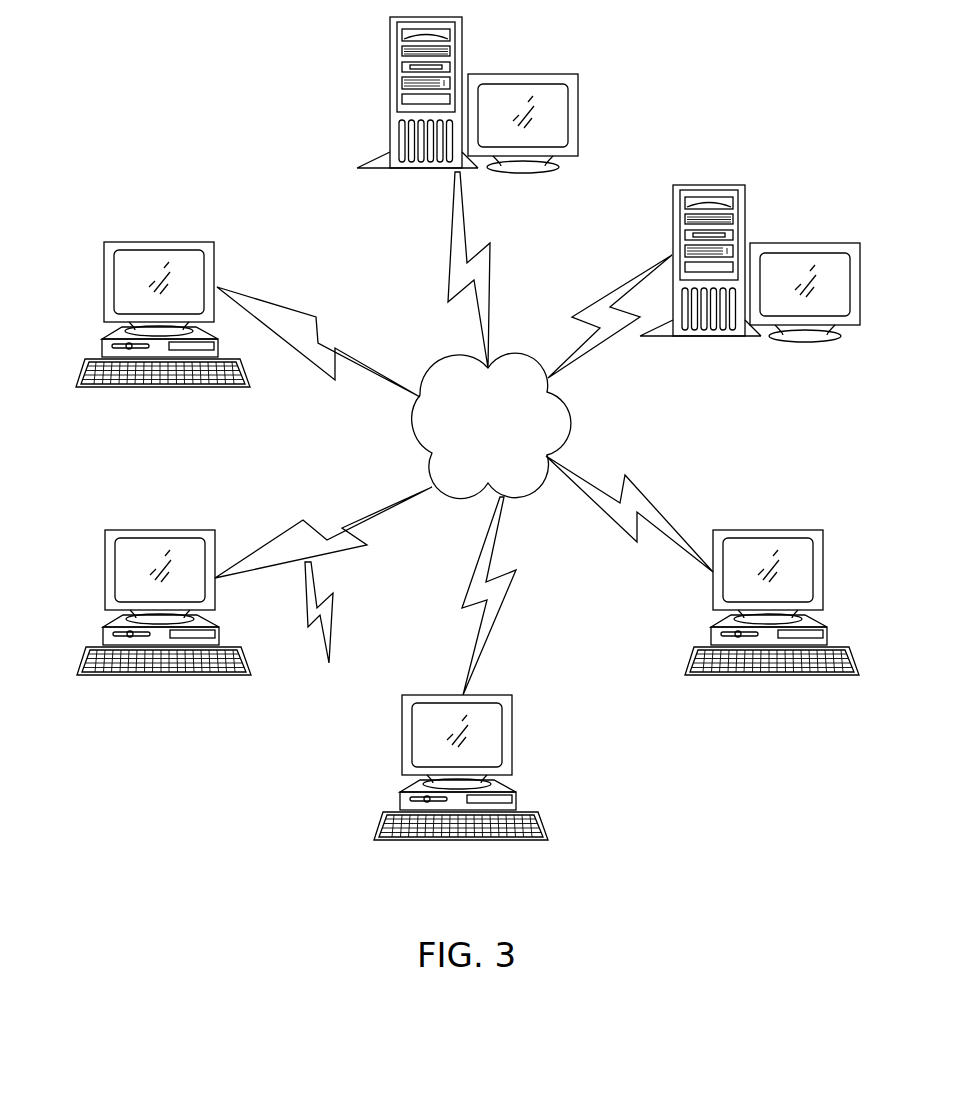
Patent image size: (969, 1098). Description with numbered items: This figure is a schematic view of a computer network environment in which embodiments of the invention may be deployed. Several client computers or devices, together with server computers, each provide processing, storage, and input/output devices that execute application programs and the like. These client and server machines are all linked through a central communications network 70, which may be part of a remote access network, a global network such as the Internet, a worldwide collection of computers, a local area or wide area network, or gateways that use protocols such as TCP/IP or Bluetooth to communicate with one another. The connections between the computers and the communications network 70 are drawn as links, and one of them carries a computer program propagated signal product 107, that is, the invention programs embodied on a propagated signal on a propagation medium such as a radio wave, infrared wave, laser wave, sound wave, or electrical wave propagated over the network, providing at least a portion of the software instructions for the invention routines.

The communications network 70 is at (479, 456).
The computer program propagated signal product 107 is at (330, 632).